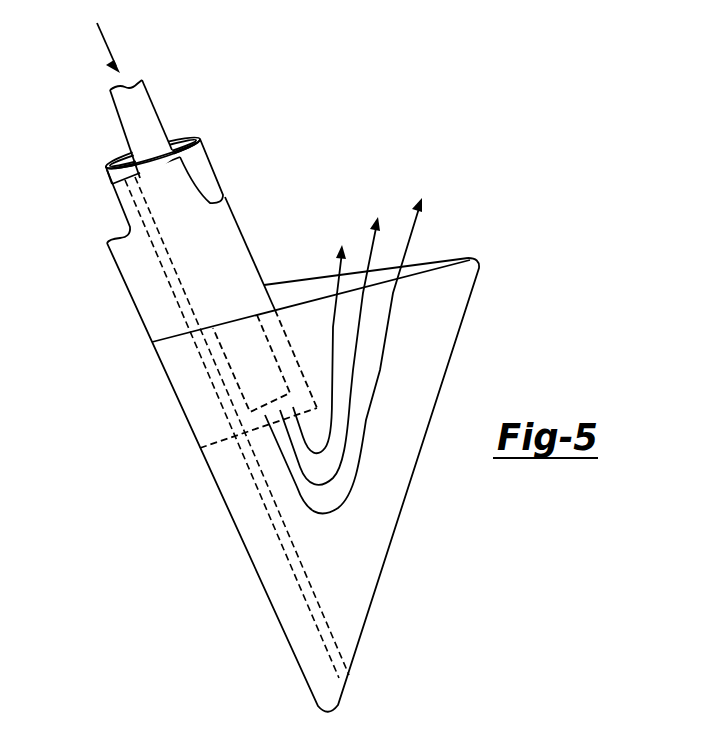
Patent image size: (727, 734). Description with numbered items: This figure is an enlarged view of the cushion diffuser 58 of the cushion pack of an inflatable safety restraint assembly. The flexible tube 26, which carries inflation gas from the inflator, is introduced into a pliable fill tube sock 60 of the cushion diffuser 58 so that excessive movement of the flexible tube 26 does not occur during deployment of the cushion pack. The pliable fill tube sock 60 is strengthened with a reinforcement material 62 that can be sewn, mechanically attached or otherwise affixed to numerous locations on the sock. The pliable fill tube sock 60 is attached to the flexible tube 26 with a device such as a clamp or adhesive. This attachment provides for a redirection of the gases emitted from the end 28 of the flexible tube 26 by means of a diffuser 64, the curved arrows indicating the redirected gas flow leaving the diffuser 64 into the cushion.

The flexible tube 26 is at (145, 103).
The first end 28 is at (250, 417).
The cushion diffuser 58 is at (395, 189).
The pliable fill tube sock 60 is at (228, 257).
The reinforcement material 62 is at (208, 178).
The diffuser 64 is at (380, 535).